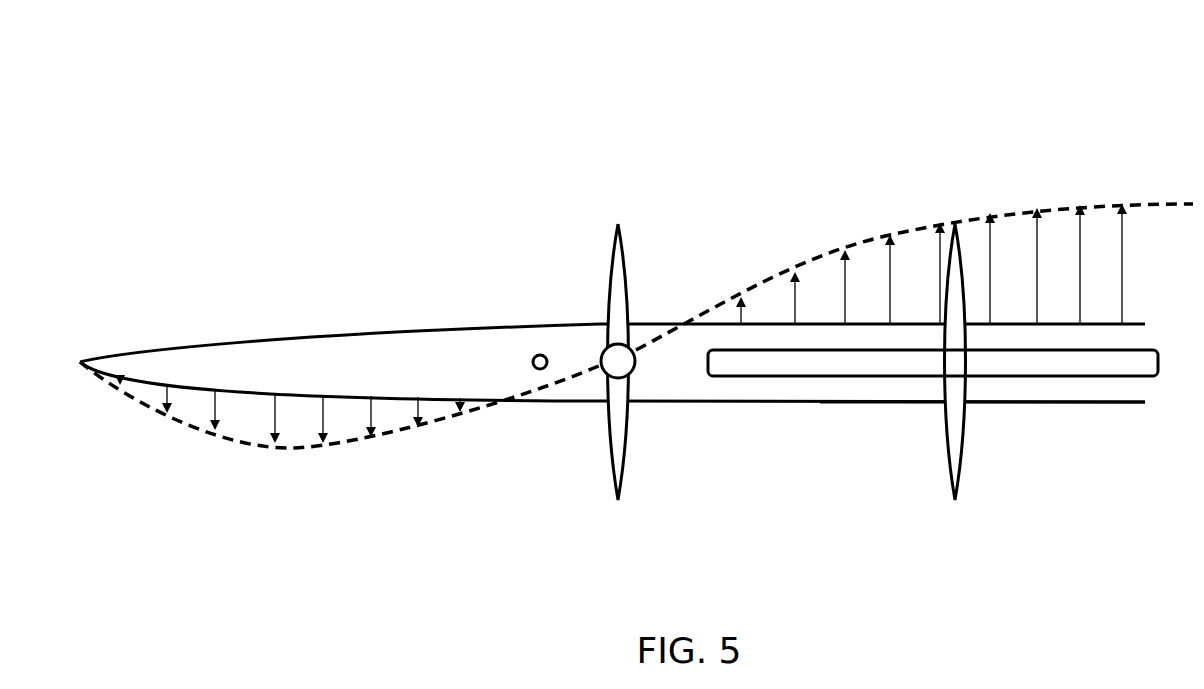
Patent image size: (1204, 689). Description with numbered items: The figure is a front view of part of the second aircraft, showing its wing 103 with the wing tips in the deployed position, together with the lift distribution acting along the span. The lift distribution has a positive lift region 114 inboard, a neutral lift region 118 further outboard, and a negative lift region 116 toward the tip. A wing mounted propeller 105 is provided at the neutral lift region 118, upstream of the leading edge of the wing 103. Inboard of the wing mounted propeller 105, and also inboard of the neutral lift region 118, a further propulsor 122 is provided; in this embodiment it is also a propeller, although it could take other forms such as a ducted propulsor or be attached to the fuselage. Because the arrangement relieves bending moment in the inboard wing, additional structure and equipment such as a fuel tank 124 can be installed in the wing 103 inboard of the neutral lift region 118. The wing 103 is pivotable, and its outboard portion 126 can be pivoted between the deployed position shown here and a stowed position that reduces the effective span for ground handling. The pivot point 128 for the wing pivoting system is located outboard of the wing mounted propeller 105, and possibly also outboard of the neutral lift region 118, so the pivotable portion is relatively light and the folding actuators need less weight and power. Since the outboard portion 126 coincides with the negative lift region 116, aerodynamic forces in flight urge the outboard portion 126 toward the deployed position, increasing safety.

The wing 103 is at (744, 152).
The wing mounted propeller 105 is at (610, 262).
The positive lift region 114 is at (820, 405).
The negative lift region 116 is at (360, 331).
The neutral lift region 118 is at (645, 403).
The further propulsor 122 is at (965, 240).
The fuel tank 124 is at (1105, 378).
The outboard portion 126 is at (248, 333).
The pivot point 128 is at (538, 370).